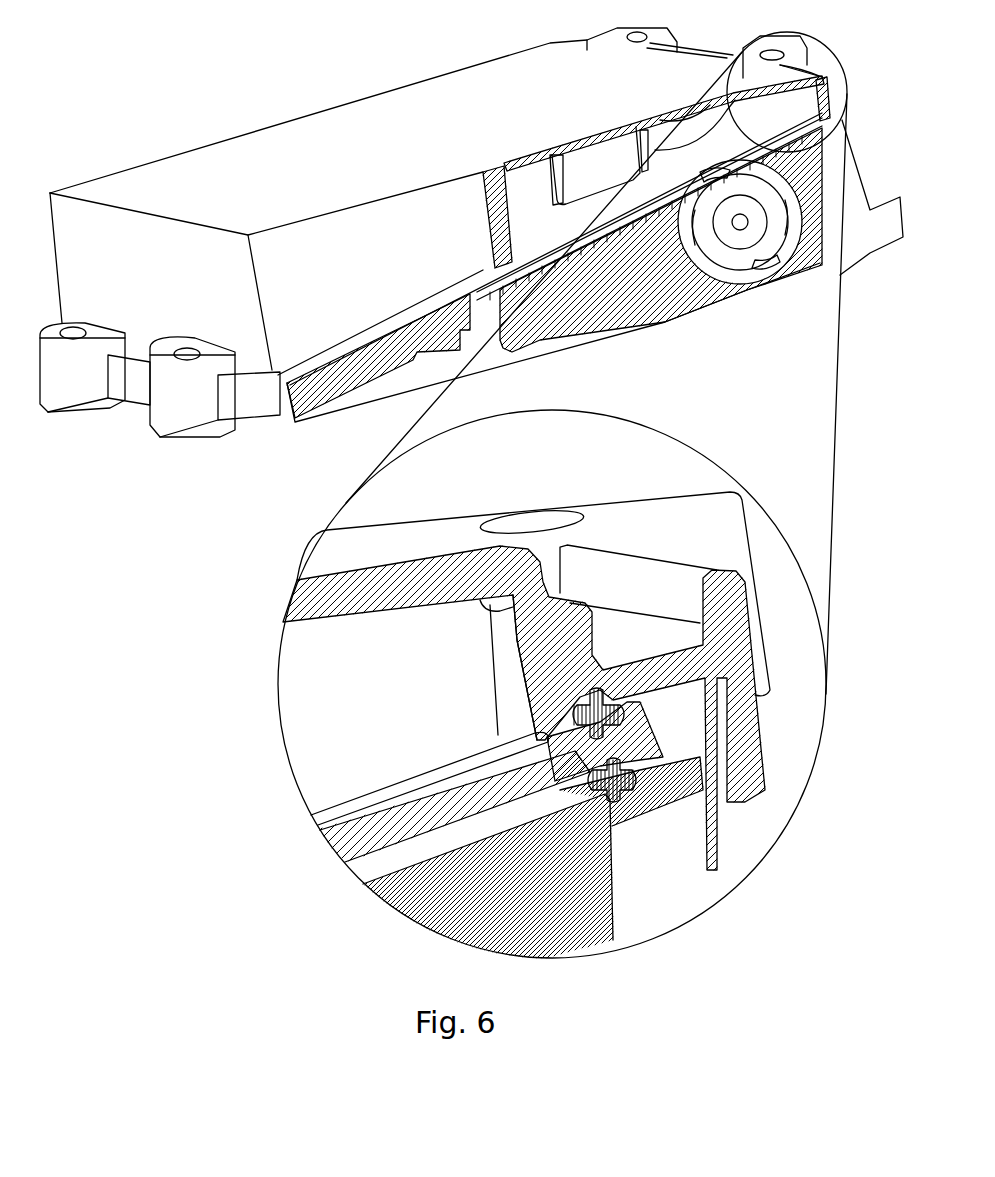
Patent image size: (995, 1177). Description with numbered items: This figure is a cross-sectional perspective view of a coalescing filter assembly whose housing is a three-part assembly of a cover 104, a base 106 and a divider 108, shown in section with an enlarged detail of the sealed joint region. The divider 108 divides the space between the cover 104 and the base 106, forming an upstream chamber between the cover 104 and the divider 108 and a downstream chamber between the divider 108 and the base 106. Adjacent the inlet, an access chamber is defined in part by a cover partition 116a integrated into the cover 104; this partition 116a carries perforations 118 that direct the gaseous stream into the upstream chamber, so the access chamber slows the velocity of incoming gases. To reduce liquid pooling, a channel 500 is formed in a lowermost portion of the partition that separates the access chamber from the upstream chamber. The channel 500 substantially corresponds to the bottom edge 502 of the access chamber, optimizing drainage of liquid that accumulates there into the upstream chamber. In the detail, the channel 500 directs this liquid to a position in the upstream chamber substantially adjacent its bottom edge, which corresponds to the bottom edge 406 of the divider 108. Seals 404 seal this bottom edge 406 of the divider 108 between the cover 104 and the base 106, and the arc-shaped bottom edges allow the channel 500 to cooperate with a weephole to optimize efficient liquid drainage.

The cover 104 is at (427, 100).
The base 106 is at (660, 312).
The divider 108 is at (537, 237).
The cover partition 116a is at (603, 203).
The perforations 118 is at (615, 152).
The channel 500 is at (787, 72).
The bottom edge of the access chamber 502 is at (543, 653).
The seals 404 is at (620, 773).
The bottom edge of the divider 406 is at (470, 758).